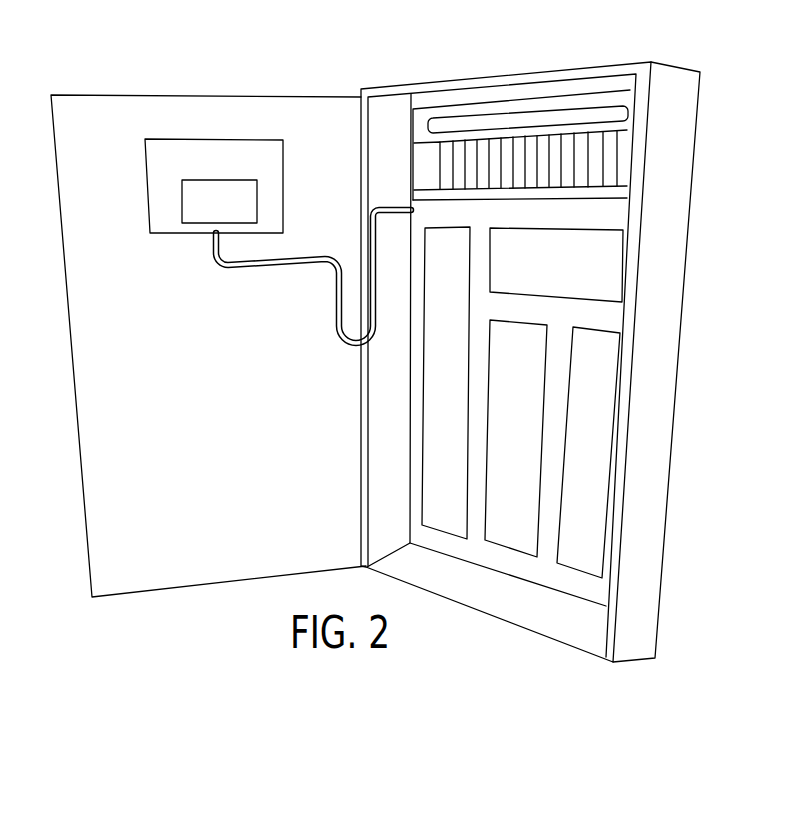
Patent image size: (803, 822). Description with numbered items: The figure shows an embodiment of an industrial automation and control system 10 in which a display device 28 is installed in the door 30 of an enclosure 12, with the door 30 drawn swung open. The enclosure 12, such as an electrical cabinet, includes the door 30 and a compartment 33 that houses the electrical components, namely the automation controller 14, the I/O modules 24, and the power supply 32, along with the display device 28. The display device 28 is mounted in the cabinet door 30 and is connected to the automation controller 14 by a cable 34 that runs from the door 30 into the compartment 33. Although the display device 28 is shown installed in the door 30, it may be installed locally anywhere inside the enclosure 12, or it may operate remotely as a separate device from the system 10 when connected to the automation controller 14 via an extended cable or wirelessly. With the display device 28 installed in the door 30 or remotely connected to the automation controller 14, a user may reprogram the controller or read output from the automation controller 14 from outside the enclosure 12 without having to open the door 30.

The system 10 is at (398, 331).
The enclosure 12 is at (553, 332).
The automation controller 14 is at (521, 109).
The I/O modules 24 is at (528, 110).
The display device 28 is at (168, 150).
The door 30 is at (208, 325).
The power supply 32 is at (411, 128).
The compartment 33 is at (687, 112).
The cable 34 is at (320, 258).